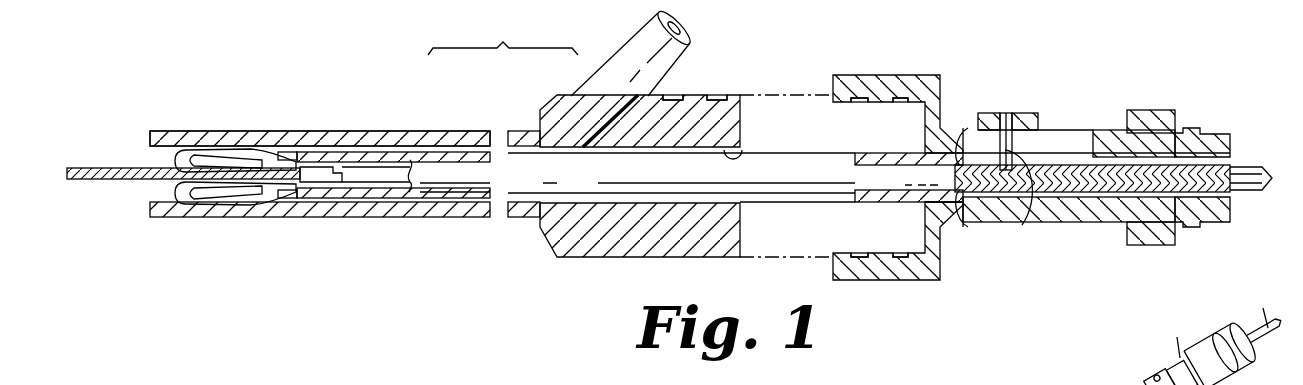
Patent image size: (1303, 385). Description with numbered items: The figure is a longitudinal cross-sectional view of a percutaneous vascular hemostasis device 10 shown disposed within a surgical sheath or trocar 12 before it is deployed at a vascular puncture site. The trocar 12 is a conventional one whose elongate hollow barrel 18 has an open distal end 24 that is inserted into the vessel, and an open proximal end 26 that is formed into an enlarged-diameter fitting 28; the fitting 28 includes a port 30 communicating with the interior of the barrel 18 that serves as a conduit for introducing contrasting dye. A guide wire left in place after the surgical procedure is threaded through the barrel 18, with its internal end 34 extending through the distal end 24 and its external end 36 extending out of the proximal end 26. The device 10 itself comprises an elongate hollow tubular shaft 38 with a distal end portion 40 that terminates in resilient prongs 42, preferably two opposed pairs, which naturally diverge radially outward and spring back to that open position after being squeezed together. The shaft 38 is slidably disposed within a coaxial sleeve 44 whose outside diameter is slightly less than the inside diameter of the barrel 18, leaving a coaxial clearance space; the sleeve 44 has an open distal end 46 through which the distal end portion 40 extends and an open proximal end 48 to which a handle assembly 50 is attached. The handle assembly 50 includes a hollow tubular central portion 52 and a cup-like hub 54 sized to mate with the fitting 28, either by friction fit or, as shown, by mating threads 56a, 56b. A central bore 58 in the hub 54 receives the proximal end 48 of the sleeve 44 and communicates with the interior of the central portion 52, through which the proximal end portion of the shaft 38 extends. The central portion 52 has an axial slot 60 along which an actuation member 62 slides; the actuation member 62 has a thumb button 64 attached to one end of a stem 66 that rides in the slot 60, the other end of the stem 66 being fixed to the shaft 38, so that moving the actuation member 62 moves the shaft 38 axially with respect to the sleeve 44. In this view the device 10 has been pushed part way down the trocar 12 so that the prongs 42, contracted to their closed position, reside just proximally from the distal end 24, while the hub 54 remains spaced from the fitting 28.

The percutaneous vascular hemostasis device 10 is at (1133, 80).
The trocar 12 is at (551, 97).
The barrel 18 is at (240, 132).
The distal end 24 is at (148, 137).
The proximal end 26 is at (745, 157).
The fitting 28 is at (600, 258).
The port 30 is at (620, 64).
The internal end 34 is at (100, 181).
The external end 36 is at (1262, 168).
The shaft 38 is at (355, 188).
The distal end portion 40 is at (292, 183).
The prongs 42 is at (203, 153).
The sleeve 44 is at (527, 178).
The distal end 46 is at (301, 151).
The proximal end 48 is at (962, 150).
The handle assembly 50 is at (1172, 246).
The central portion 52 is at (1083, 223).
The hub 54 is at (924, 74).
The mating threads 56a is at (701, 94).
The mating threads 56b is at (833, 80).
The central bore 58 is at (950, 207).
The axial slot 60 is at (1062, 148).
The actuation member 62 is at (1155, 370).
The thumb button 64 is at (1022, 113).
The stem 66 is at (1025, 207).